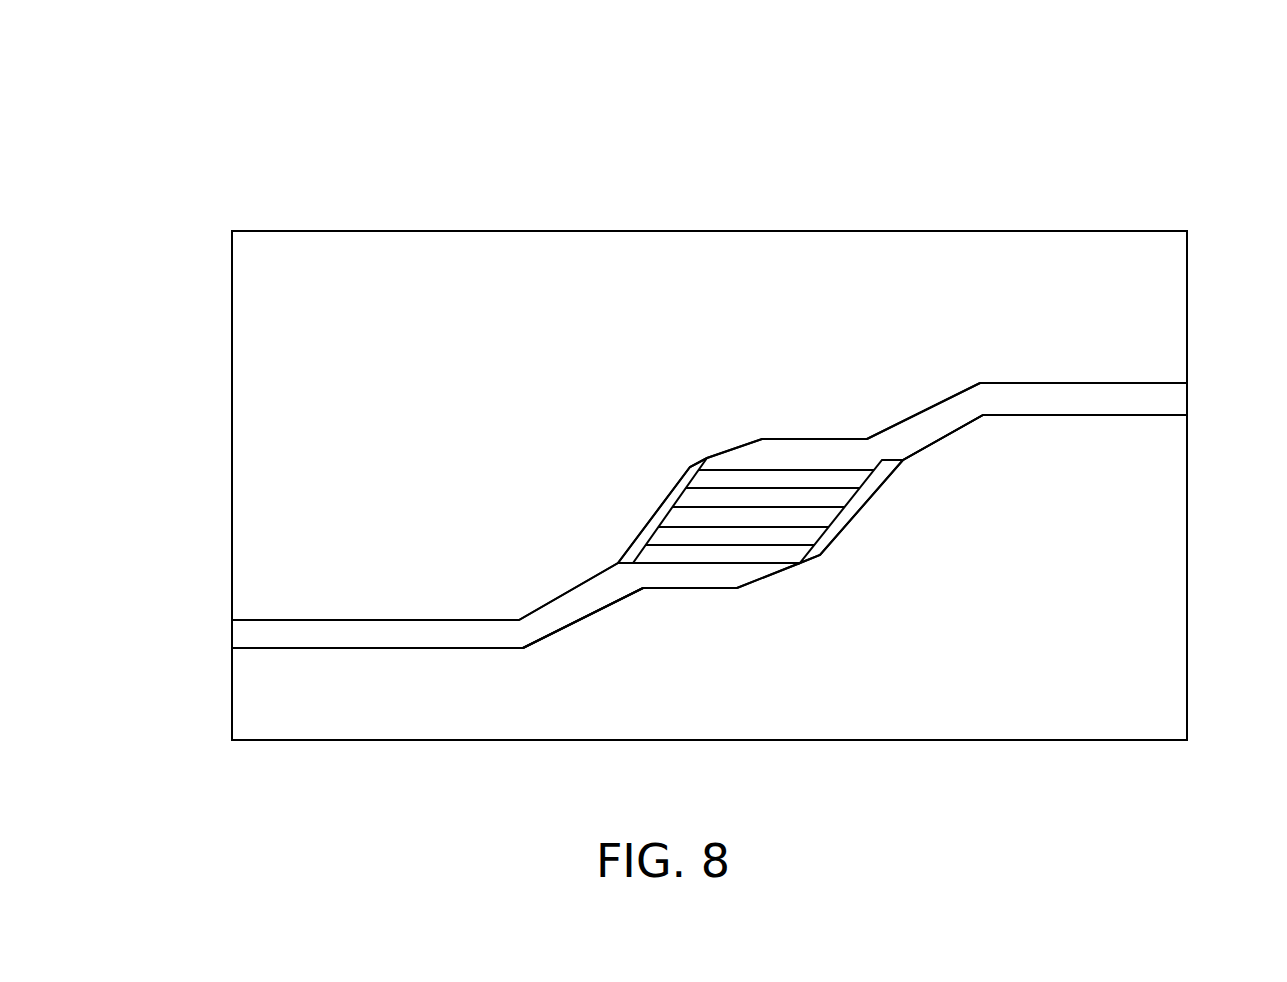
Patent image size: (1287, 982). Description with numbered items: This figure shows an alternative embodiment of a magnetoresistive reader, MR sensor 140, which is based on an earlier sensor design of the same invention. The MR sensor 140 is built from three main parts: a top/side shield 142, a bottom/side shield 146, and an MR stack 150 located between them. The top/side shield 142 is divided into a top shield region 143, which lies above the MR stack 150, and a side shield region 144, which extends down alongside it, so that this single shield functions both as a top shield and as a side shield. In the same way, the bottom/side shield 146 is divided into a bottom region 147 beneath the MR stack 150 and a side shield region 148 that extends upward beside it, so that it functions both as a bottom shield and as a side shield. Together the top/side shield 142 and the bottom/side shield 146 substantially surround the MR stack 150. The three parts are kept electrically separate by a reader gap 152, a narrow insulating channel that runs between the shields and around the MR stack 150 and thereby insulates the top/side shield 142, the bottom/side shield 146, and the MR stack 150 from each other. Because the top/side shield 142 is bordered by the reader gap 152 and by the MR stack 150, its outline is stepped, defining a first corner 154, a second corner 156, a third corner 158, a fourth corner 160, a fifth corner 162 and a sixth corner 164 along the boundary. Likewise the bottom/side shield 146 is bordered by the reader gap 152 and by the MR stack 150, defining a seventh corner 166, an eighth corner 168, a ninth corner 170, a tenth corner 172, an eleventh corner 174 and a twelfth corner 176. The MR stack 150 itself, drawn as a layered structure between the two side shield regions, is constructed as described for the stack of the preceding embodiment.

The MR sensor 140 is at (282, 213).
The top/side shield 142 is at (548, 230).
The top shield region 143 is at (975, 308).
The side shield region 144 is at (453, 505).
The bottom/side shield 146 is at (840, 741).
The bottom region 147 is at (593, 685).
The side shield region 148 is at (1008, 541).
The MR stack 150 is at (782, 542).
The reader gap 152 is at (255, 640).
The first corner 154 is at (518, 620).
The second corner 156 is at (618, 563).
The third corner 158 is at (690, 460).
The fourth corner 160 is at (762, 439).
The fifth corner 162 is at (867, 439).
The sixth corner 164 is at (980, 383).
The seventh corner 166 is at (1085, 447).
The eighth corner 168 is at (903, 459).
The ninth corner 170 is at (803, 556).
The tenth corner 172 is at (738, 590).
The eleventh corner 174 is at (645, 589).
The twelfth corner 176 is at (527, 650).